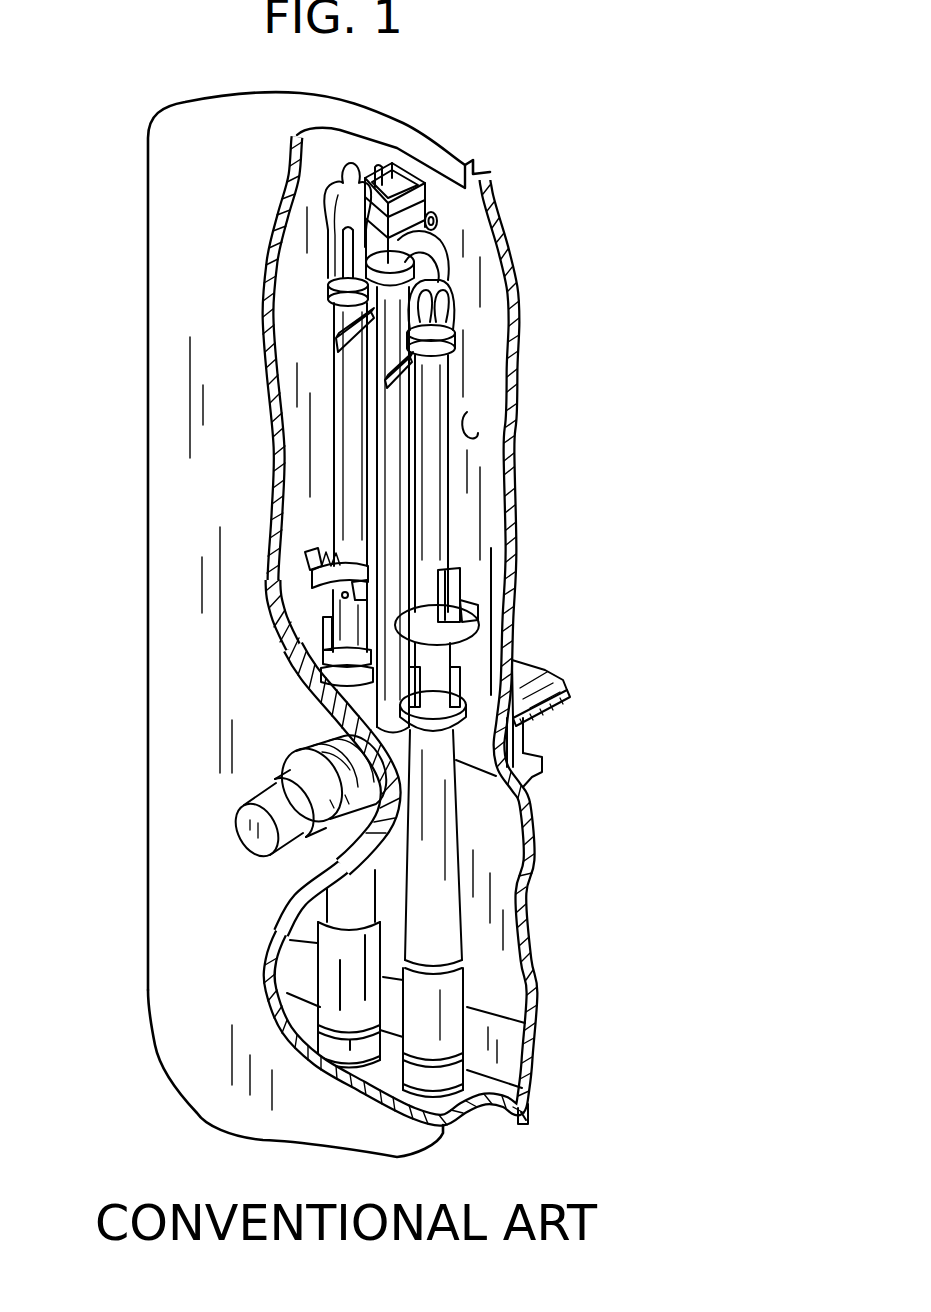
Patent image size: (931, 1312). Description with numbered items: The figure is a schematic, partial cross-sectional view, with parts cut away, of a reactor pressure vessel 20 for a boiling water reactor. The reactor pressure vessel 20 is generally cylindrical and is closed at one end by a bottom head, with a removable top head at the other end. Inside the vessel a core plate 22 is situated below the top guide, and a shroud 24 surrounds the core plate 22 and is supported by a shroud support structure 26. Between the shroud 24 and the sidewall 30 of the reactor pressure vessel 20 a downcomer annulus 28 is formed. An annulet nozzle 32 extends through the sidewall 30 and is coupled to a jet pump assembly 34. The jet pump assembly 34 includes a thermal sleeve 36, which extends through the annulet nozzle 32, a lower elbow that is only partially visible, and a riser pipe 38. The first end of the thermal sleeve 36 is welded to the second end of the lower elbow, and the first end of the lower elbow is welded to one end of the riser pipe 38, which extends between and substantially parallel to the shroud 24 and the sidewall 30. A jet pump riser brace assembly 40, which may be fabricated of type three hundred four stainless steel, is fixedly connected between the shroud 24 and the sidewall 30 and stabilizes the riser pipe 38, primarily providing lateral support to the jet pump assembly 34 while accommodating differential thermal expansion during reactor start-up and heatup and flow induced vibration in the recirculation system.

The reactor pressure vessel 20 is at (143, 993).
The core plate 22 is at (563, 680).
The shroud 24 is at (494, 613).
The shroud support structure 26 is at (535, 1042).
The downcomer annulus 28 is at (468, 413).
The sidewall 30 is at (270, 967).
The annulet nozzle 32 is at (287, 762).
The jet pump assembly 34 is at (320, 504).
The thermal sleeve 36 is at (232, 833).
The riser pipe 38 is at (372, 416).
The jet pump riser brace assembly 40 is at (337, 346).